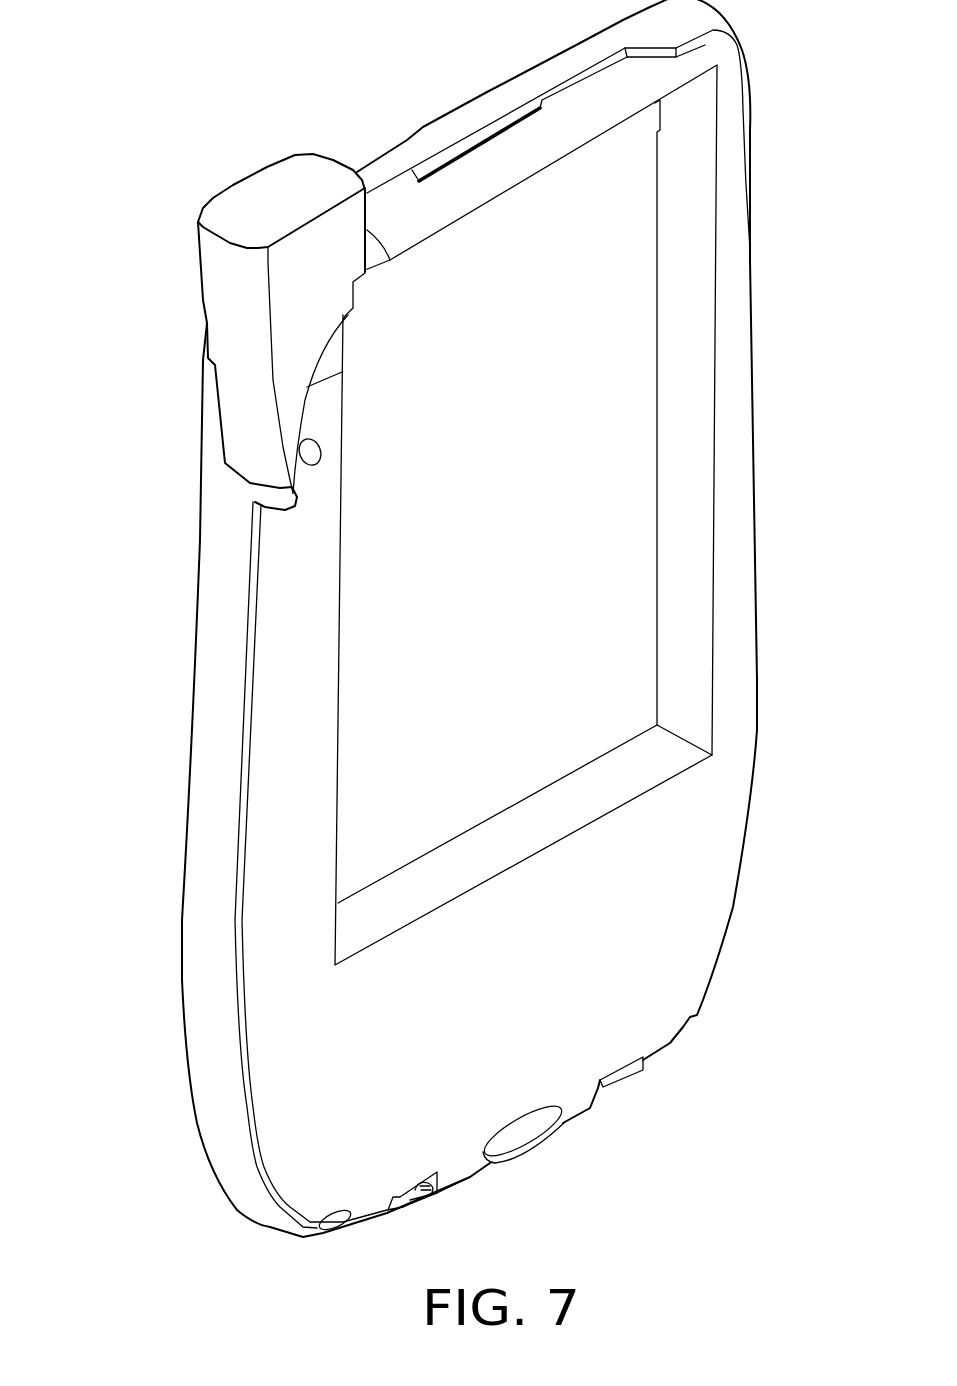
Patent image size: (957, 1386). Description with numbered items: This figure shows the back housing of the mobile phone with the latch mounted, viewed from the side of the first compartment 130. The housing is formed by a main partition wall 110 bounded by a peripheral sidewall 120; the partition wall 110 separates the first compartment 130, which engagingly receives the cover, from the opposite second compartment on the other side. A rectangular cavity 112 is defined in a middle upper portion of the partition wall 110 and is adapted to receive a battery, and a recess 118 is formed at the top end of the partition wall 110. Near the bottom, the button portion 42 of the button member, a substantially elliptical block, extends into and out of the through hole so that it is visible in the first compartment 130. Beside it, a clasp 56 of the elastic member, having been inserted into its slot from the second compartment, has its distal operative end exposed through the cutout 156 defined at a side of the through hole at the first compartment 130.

The partition wall 110 is at (275, 630).
The rectangular cavity 112 is at (633, 332).
The recess 118 is at (468, 142).
The peripheral sidewall 120 is at (247, 1097).
The first compartment 130 is at (292, 893).
The button portion 42 is at (528, 1137).
The clasp 56 is at (422, 1195).
The cutout 156 is at (637, 1070).